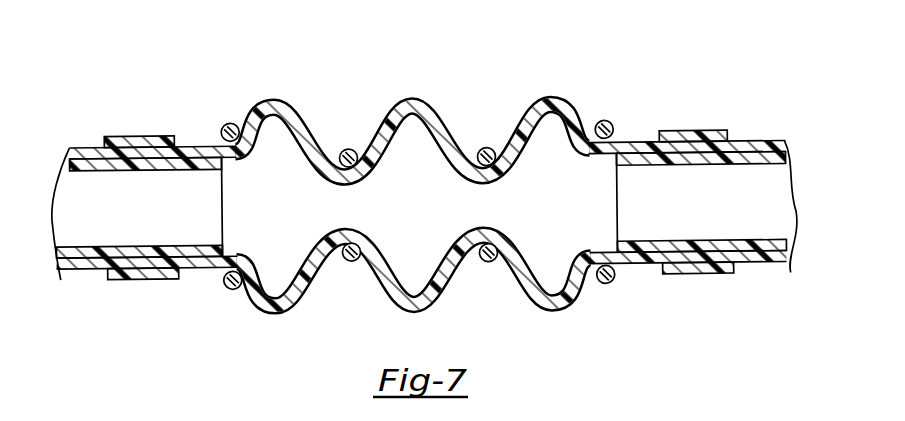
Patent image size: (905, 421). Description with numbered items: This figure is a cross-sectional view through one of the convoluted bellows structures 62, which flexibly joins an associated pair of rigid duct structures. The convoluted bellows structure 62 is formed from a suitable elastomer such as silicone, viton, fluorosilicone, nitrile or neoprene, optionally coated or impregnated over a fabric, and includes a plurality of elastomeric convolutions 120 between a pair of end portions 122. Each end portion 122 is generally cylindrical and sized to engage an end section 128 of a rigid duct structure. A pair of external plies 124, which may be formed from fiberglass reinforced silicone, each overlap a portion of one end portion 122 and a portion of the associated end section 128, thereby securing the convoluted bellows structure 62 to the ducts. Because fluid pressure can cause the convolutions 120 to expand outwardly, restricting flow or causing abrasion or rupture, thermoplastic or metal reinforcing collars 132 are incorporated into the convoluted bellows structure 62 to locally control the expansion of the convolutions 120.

The convoluted bellows structure 62 is at (408, 72).
The elastomeric convolutions 120 is at (298, 110).
The end portions 122 is at (186, 118).
The external plies 124 is at (112, 148).
The end sections 128 is at (105, 230).
The reinforcing collars 132 is at (228, 287).